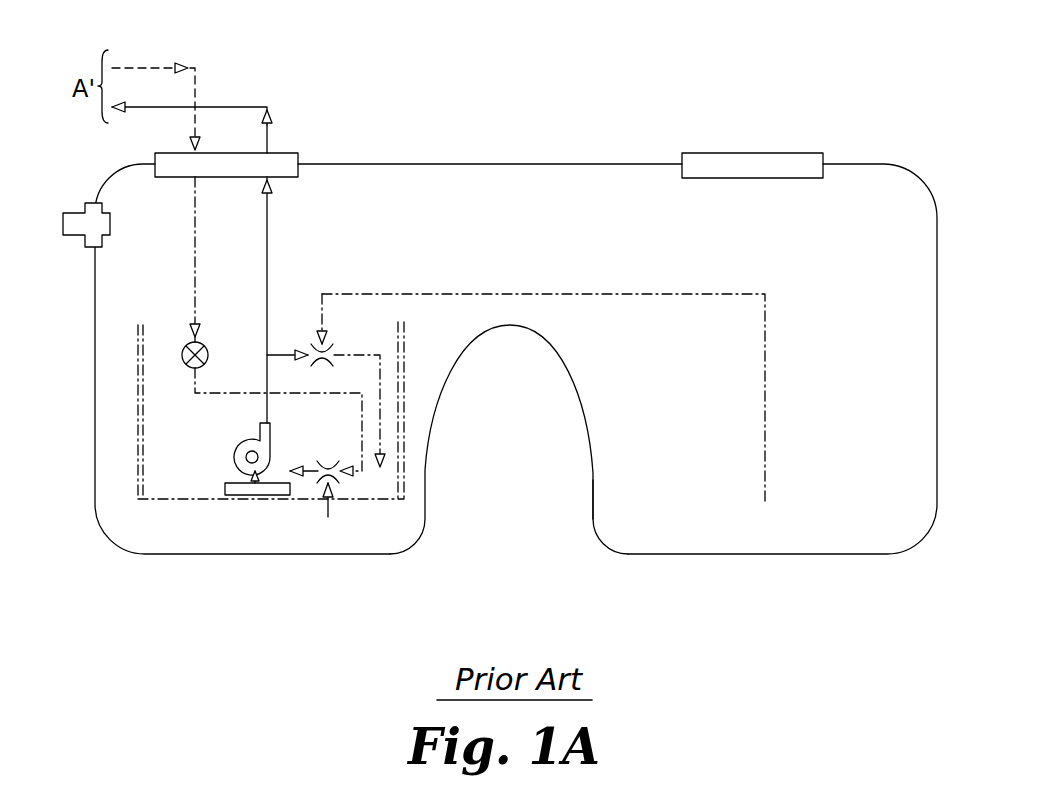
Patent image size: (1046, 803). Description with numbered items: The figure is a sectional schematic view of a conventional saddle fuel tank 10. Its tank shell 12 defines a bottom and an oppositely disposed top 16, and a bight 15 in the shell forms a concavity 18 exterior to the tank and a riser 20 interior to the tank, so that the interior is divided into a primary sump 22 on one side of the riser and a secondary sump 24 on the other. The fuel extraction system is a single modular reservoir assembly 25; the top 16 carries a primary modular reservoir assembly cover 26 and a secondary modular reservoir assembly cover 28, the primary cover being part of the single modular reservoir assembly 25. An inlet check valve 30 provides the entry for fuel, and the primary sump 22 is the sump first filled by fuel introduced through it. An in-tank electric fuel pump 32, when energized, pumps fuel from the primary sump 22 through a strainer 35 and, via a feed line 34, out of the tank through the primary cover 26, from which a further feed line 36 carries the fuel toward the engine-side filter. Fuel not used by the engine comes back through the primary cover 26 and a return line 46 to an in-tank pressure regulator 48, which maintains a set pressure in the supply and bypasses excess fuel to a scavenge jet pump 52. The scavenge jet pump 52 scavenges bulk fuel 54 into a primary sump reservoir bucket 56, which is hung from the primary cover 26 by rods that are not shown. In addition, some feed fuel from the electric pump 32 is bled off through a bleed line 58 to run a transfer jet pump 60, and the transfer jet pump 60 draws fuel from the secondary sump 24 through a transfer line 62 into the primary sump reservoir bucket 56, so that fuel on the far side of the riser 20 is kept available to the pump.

The saddle fuel tank 10 is at (600, 122).
The tank shell 12 is at (917, 178).
The bight 15 is at (602, 467).
The top 16 is at (538, 163).
The concavity 18 is at (523, 428).
The riser 20 is at (577, 390).
The primary sump 22 is at (435, 370).
The secondary sump 24 is at (605, 360).
The single modular reservoir assembly 25 is at (295, 190).
The primary modular reservoir assembly cover 26 is at (283, 153).
The secondary modular reservoir assembly cover 28 is at (725, 152).
The inlet check valve 30 is at (63, 213).
The electric fuel pump 32 is at (233, 460).
The feed line 34 is at (265, 203).
The strainer 35 is at (235, 493).
The feed line 36 is at (236, 107).
The return line 46 is at (133, 68).
The in-tank pressure regulator 48 is at (190, 343).
The scavenge jet pump 52 is at (333, 462).
The bulk fuel 54 is at (330, 507).
The primary sump reservoir bucket 56 is at (138, 418).
The bleed line 58 is at (287, 347).
The transfer jet pump 60 is at (328, 362).
The transfer line 62 is at (657, 293).